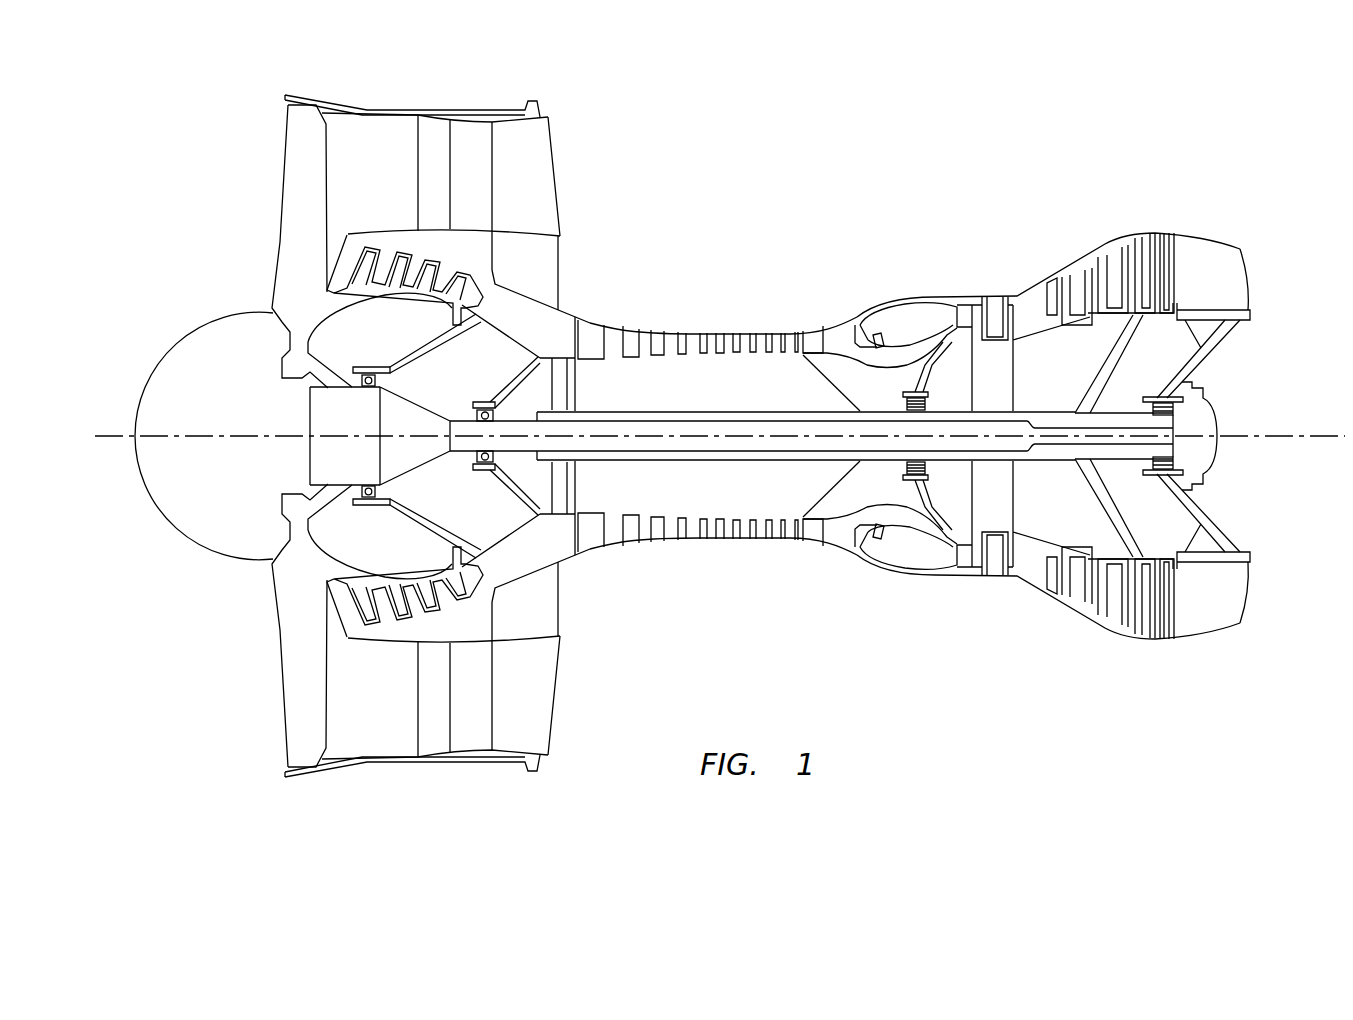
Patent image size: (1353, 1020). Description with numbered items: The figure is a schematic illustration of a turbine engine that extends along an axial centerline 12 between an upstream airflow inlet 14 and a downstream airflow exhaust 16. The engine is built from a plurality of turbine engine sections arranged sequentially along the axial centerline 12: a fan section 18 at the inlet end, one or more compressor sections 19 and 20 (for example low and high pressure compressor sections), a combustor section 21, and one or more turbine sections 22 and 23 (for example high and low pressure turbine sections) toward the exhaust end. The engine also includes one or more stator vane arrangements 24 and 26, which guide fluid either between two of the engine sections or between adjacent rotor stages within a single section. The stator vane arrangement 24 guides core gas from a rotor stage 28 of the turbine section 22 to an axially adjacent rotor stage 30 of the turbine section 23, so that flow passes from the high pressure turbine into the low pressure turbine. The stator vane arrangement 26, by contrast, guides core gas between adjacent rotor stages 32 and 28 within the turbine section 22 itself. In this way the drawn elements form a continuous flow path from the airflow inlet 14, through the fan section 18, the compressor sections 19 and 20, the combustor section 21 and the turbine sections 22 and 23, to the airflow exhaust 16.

The axial centerline 12 is at (1268, 432).
The airflow inlet 14 is at (293, 780).
The airflow exhaust 16 is at (1248, 622).
The fan section 18 is at (253, 122).
The low pressure compressor section 19 is at (386, 222).
The high pressure compressor section 20 is at (652, 322).
The combustor section 21 is at (891, 297).
The high pressure turbine section 22 is at (991, 288).
The low pressure turbine section 23 is at (1166, 230).
The stator vane arrangement 24 is at (1055, 597).
The stator vane arrangement 26 is at (988, 574).
The rotor stage 28 is at (1007, 573).
The rotor stage 30 is at (1067, 603).
The rotor stage 32 is at (967, 573).